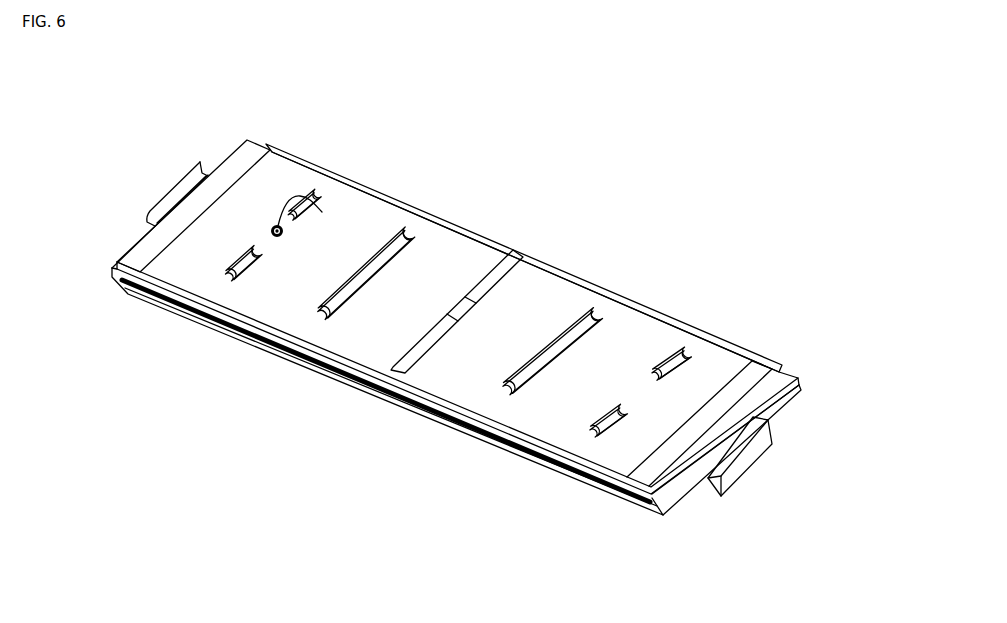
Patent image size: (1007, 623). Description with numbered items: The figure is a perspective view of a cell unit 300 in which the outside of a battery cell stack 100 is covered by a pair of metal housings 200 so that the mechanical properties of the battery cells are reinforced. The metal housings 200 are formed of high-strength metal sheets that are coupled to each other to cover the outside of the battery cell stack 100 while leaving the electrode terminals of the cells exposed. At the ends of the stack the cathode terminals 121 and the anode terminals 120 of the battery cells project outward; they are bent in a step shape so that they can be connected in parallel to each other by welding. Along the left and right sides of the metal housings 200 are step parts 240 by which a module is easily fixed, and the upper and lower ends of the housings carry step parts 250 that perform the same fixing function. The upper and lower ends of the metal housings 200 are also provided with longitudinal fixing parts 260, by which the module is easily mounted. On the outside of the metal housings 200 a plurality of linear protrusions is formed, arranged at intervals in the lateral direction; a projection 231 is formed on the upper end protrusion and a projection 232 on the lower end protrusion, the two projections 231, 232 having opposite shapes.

The cell unit 300 is at (607, 86).
The metal housings 200 is at (295, 376).
The step parts 250 is at (242, 153).
The longitudinal fixing parts 260 is at (275, 170).
The projection 231 is at (335, 213).
The projection 232 is at (642, 388).
The step parts 240 is at (438, 417).
The battery cell stack 100 is at (796, 366).
The cathode terminals 121 is at (170, 187).
The anode terminals 120 is at (730, 458).